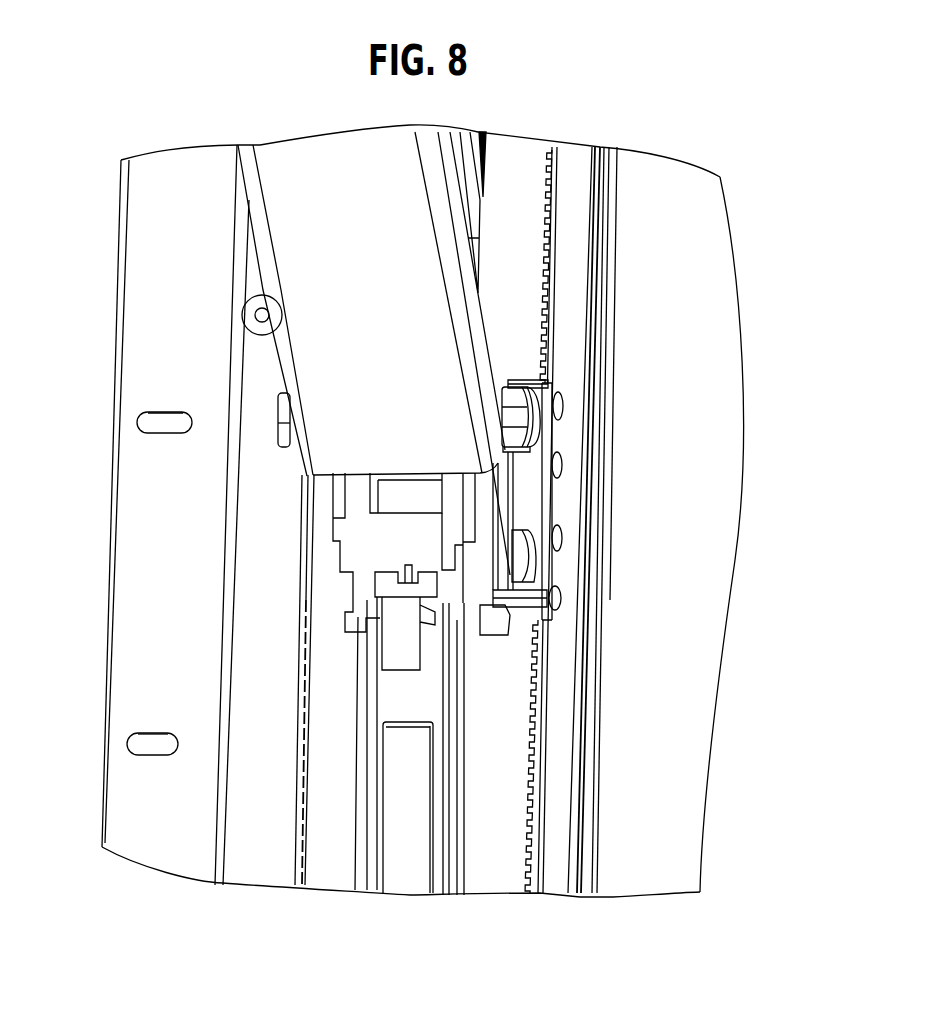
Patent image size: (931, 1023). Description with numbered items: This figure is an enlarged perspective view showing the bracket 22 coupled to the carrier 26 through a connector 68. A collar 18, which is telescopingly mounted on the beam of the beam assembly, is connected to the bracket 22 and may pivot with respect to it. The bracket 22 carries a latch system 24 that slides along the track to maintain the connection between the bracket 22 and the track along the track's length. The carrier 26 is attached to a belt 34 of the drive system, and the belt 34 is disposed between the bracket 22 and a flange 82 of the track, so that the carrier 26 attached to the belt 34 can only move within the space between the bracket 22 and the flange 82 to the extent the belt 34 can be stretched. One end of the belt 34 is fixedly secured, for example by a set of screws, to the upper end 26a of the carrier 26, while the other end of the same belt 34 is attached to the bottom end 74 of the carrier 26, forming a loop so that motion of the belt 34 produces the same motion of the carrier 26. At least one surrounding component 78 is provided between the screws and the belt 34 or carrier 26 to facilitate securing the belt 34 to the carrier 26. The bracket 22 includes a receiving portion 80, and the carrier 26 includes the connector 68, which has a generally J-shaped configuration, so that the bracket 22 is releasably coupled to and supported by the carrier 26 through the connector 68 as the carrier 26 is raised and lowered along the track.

The collar 18 is at (317, 352).
The bracket 22 is at (447, 640).
The latch system 24 is at (402, 640).
The carrier 26 is at (530, 497).
The upper end of the carrier 26a is at (551, 387).
The belt 34 is at (535, 780).
The connector 68 is at (503, 630).
The bottom end of the carrier 74 is at (550, 623).
The surrounding component 78 is at (548, 432).
The receiving portion 80 is at (487, 570).
The flange 82 is at (585, 555).